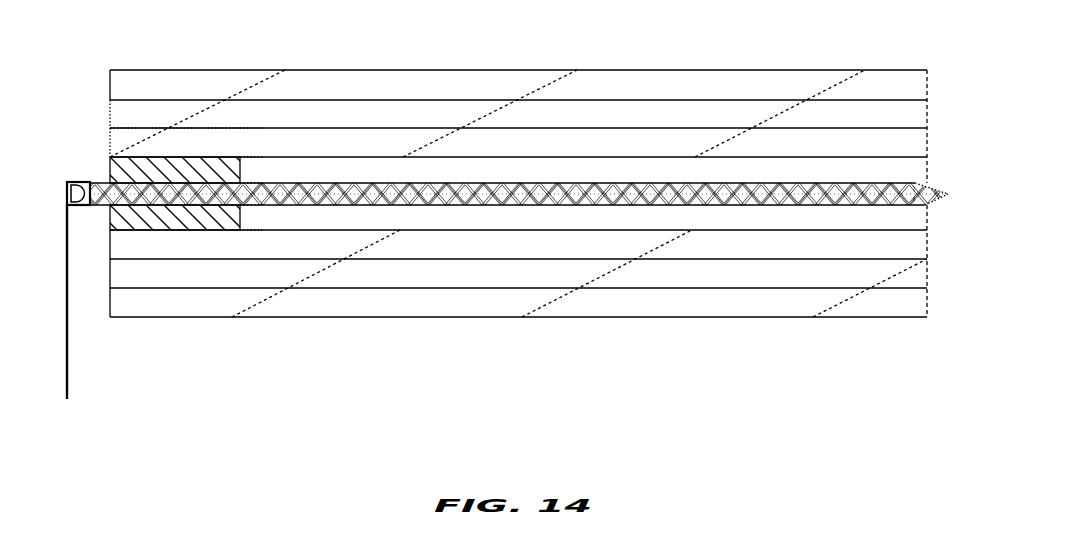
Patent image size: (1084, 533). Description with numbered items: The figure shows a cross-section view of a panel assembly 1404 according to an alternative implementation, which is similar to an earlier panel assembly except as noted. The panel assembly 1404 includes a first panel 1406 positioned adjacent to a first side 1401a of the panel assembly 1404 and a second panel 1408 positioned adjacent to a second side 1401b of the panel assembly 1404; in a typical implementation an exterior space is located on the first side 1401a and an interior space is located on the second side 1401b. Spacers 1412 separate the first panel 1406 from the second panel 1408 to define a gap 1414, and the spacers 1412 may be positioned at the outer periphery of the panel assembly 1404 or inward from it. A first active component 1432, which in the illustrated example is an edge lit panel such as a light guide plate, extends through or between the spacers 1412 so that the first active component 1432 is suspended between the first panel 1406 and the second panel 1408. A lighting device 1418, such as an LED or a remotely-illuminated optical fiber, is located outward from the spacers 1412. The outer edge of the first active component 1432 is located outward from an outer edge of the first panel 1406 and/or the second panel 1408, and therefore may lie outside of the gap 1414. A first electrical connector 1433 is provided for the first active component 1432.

The panel assembly 1404 is at (142, 42).
The first side 1401a is at (519, 105).
The second side 1401b is at (519, 282).
The first panel 1406 is at (862, 70).
The second panel 1408 is at (855, 318).
The spacers 1412 is at (218, 166).
The gap 1414 is at (580, 166).
The first active component 1432 is at (330, 188).
The lighting device 1418 is at (77, 181).
The first electrical connector 1433 is at (68, 362).